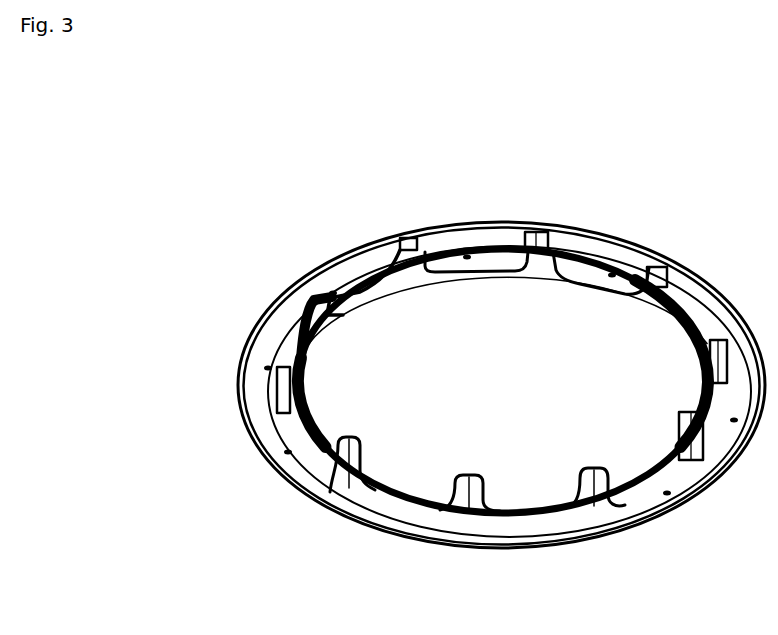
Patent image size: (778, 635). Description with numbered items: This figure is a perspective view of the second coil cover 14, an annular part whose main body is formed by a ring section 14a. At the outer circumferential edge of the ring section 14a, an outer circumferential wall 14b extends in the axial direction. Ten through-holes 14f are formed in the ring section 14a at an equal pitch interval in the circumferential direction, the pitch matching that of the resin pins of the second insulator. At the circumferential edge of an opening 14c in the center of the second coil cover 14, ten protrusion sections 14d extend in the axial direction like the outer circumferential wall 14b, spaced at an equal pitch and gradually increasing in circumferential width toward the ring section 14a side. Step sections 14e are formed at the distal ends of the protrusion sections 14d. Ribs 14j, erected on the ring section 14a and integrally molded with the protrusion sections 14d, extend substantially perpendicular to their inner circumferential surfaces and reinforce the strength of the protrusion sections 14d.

The second coil cover 14 is at (628, 238).
The ring section 14a is at (374, 275).
The outer circumferential wall 14b is at (408, 526).
The opening 14c is at (532, 487).
The protrusion sections 14d is at (540, 272).
The step sections 14e is at (538, 232).
The through-holes 14f is at (264, 366).
The ribs 14j is at (338, 470).